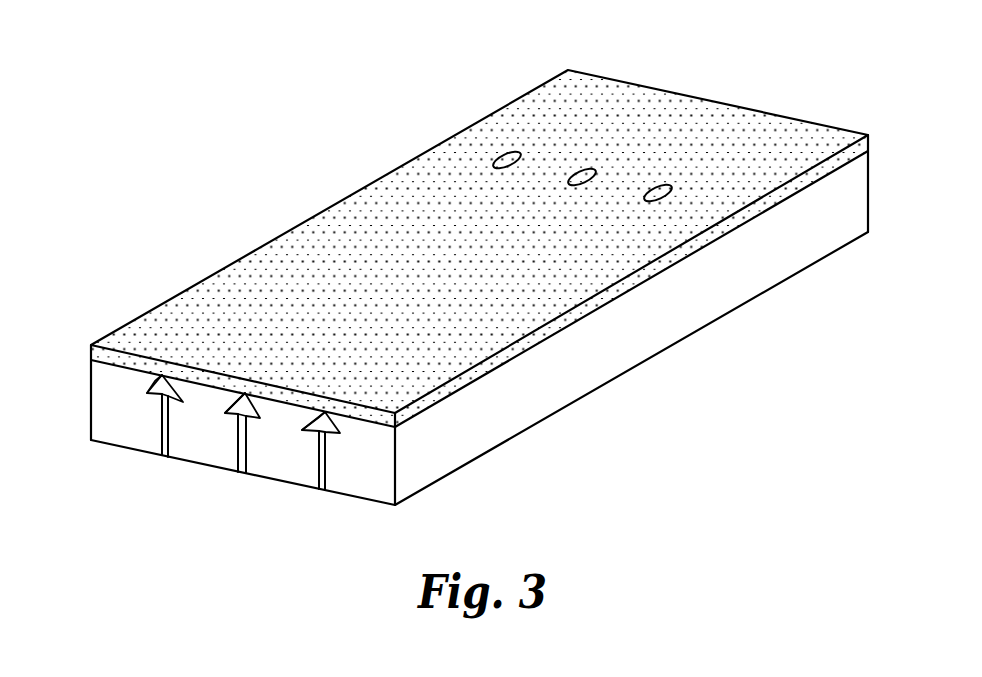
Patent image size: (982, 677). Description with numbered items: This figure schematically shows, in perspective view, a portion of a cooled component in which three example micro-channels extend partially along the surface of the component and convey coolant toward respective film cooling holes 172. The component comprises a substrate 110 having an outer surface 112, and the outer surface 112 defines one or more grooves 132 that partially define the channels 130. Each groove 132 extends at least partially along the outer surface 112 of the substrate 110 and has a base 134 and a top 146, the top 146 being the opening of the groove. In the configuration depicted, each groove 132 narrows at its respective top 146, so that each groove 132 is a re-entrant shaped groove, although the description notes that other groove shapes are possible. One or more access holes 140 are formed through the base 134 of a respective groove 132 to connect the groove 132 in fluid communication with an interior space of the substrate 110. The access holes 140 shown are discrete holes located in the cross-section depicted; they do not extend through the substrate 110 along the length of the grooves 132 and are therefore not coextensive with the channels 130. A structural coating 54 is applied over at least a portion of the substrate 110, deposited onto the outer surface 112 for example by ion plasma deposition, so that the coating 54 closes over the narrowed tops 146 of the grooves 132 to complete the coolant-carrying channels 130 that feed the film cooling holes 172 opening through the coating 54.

The structural coating 54 is at (667, 103).
The substrate 110 is at (790, 248).
The outer surface 112 is at (414, 423).
The openings 172 is at (658, 193).
The channels 130 is at (299, 432).
The grooves 132 is at (243, 442).
The base 134 is at (340, 430).
The access holes 140 is at (320, 478).
The top 146 is at (150, 393).